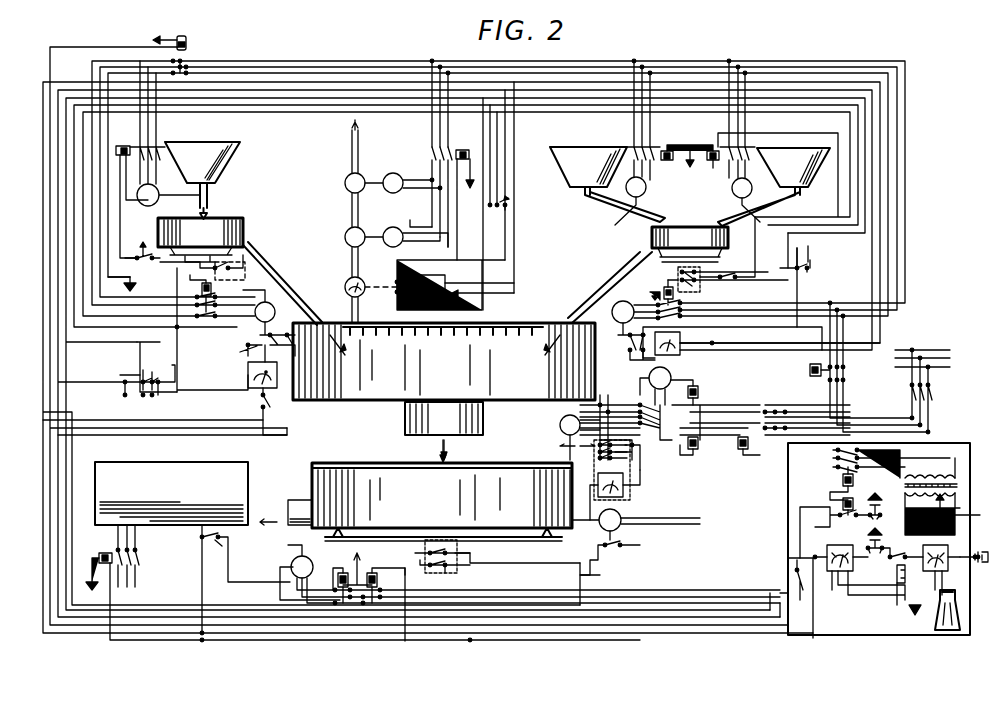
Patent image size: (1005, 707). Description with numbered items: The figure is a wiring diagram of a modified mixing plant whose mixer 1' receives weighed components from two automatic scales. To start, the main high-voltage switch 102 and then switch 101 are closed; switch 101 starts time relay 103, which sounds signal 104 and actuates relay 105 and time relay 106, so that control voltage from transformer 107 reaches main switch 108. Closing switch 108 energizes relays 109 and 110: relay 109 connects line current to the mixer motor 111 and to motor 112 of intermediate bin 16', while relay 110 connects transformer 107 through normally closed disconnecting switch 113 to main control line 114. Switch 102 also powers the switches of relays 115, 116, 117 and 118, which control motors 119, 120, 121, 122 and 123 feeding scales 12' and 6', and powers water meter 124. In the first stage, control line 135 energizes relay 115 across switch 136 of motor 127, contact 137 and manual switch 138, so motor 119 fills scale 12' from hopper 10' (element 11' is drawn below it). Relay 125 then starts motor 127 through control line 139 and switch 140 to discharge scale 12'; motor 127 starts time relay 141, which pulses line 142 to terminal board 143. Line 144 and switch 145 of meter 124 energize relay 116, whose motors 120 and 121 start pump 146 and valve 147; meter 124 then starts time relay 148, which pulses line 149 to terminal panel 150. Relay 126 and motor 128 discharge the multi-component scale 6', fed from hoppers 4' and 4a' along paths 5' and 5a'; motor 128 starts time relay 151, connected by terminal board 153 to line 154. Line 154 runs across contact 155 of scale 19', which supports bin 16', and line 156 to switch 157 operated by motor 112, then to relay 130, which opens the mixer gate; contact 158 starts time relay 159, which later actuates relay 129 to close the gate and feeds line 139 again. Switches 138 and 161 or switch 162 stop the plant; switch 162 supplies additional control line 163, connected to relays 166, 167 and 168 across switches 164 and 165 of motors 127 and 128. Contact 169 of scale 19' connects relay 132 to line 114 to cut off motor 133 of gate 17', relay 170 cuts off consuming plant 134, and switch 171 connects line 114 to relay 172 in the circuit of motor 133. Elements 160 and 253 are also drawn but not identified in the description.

The mixer 1' is at (419, 351).
The hopper 4' is at (583, 167).
The hopper 4a' is at (798, 169).
The feed chute 5' is at (625, 205).
The feed chute 5a' is at (762, 206).
The automatic scale 6' is at (657, 275).
The hopper 10' is at (212, 162).
The discharge spout 11' is at (222, 200).
The automatic scale 12' is at (201, 229).
The intermediate bin 16' is at (442, 484).
The discharge gate 17' is at (286, 504).
The scale 19' is at (443, 541).
The switch 101 is at (984, 553).
The main high-voltage switch 102 is at (932, 395).
The time relay 103 is at (950, 553).
The signal 104 is at (960, 616).
The relay 105 is at (903, 553).
The time relay 106 is at (827, 551).
The transformer 107 is at (935, 473).
The main switch 108 is at (875, 535).
The relay 109 is at (853, 480).
The relay 110 is at (840, 517).
The motor 111 is at (648, 386).
The motor 112 is at (601, 527).
The disconnecting switch 113 is at (875, 505).
The main control circuit 114 is at (270, 78).
The relay 115 is at (126, 146).
The relay 116 is at (463, 150).
The relay 117 is at (668, 160).
The relay 118 is at (713, 160).
The motor 119 is at (138, 200).
The motor 120 is at (394, 173).
The motor 121 is at (394, 227).
The motor 122 is at (646, 188).
The motor 123 is at (732, 188).
The water meter 124 is at (345, 287).
The relay 125 is at (211, 290).
The relay 126 is at (676, 270).
The motor 127 is at (262, 302).
The motor 128 is at (628, 298).
The relay 129 is at (693, 386).
The relay 130 is at (692, 455).
The relay 132 is at (380, 560).
The motor 133 is at (291, 567).
The consuming plant 134 is at (560, 420).
The control line 135 is at (228, 330).
The switch 136 is at (242, 350).
The contact 137 is at (200, 247).
The manual switch 138 is at (100, 400).
The control line 139 is at (55, 505).
The switch 140 is at (185, 268).
The time relay 141 is at (248, 380).
The line 142 is at (182, 365).
The terminal board 143 is at (125, 378).
The line 144 is at (220, 98).
The switch 145 is at (396, 292).
The pump 146 is at (345, 183).
The valve 147 is at (345, 237).
The time relay 148 is at (432, 275).
The line 149 is at (514, 258).
The terminal panel 150 is at (510, 203).
The time relay 151 is at (680, 346).
The terminal board 153 is at (810, 266).
The line 154 is at (55, 225).
The contact 155 is at (443, 570).
The line 156 is at (540, 565).
The switch 157 is at (612, 548).
The contact 158 is at (607, 418).
The time relay 159 is at (600, 497).
The contacts 160 is at (594, 455).
The switch 161 is at (737, 274).
The switch 162 is at (760, 330).
The additional control line 163 is at (100, 58).
The switch 164 is at (282, 338).
The switch 165 is at (627, 348).
The relay 166 is at (190, 43).
The relay 167 is at (810, 368).
The relay 168 is at (741, 455).
The contact 169 is at (428, 551).
The relay 170 is at (105, 553).
The switch 171 is at (222, 540).
The relay 172 is at (342, 568).
The contact 253 is at (635, 444).